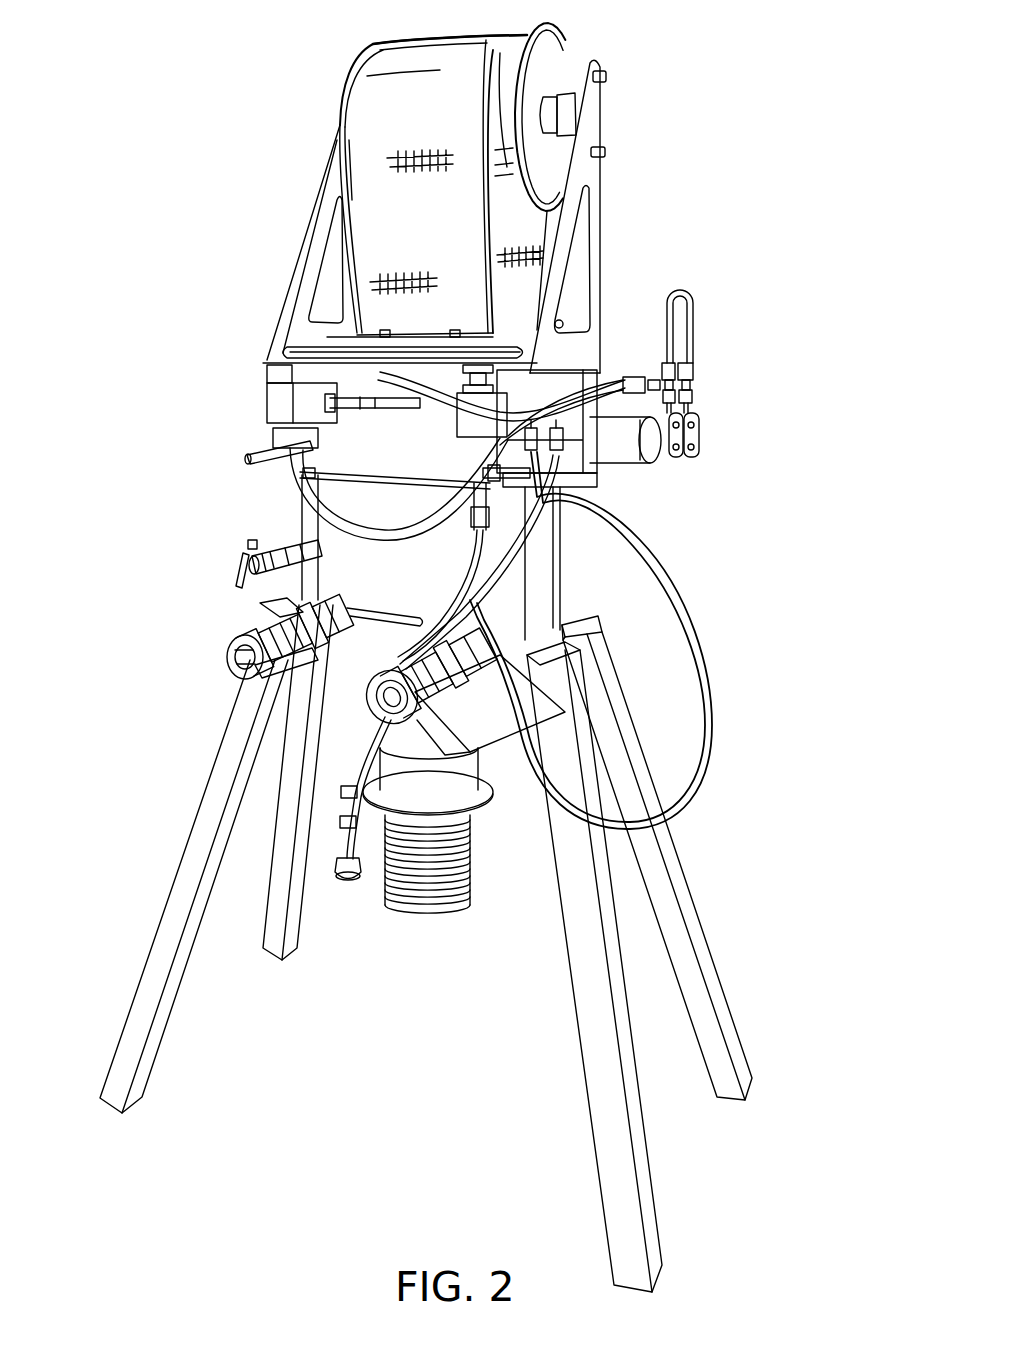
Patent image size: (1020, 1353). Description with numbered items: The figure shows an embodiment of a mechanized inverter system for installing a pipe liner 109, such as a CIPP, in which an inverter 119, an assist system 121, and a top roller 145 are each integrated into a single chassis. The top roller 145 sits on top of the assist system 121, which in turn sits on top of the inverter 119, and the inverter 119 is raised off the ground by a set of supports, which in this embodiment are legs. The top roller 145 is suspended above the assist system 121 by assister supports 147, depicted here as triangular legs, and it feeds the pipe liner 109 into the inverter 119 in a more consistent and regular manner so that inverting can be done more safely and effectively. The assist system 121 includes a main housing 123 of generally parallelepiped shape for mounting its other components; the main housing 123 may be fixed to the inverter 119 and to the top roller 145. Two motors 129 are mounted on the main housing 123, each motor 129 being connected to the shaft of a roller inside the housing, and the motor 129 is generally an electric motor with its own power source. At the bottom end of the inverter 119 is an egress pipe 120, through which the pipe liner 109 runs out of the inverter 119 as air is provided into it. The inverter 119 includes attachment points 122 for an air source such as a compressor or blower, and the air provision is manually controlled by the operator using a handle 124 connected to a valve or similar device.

The pipe liner 109 is at (400, 58).
The top roller 145 is at (554, 47).
The assister supports 147 is at (597, 106).
The main housing 123 is at (268, 363).
The assist system 121 is at (239, 408).
The motor 129 is at (667, 459).
The inverter 119 is at (197, 583).
The handle 124 is at (294, 646).
The attachment points 122 is at (385, 712).
The egress pipe 120 is at (430, 908).